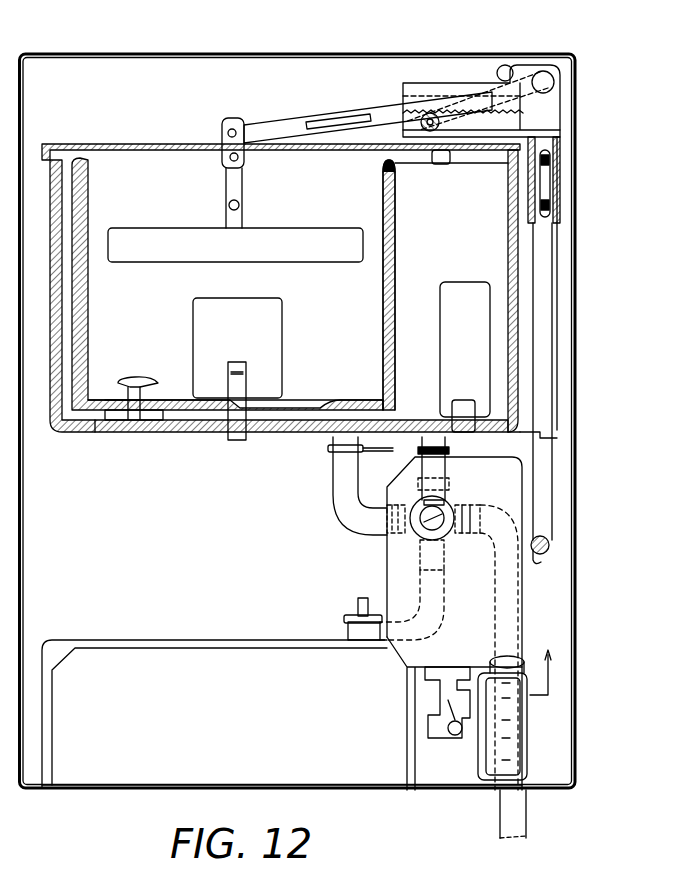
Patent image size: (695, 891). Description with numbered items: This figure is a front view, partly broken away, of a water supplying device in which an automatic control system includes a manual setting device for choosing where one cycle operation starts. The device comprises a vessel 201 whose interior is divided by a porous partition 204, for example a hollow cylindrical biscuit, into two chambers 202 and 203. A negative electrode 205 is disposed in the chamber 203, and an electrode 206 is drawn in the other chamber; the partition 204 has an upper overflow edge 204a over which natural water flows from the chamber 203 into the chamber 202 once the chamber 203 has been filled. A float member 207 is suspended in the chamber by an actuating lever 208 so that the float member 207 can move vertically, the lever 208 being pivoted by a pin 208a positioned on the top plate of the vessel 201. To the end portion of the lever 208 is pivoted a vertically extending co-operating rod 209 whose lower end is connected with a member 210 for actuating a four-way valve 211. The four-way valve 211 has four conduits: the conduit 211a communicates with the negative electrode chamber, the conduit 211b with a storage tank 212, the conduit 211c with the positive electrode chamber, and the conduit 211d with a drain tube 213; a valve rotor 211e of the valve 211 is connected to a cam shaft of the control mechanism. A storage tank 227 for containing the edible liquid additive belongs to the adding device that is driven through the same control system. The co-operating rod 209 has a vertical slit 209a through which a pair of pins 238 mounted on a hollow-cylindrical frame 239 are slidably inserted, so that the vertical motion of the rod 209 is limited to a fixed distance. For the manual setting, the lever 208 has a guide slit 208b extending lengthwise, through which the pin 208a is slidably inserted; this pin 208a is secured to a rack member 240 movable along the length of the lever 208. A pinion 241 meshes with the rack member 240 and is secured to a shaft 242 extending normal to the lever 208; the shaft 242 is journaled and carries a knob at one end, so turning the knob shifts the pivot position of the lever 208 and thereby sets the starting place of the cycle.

The vessel 201 is at (50, 330).
The chamber 202 is at (346, 336).
The chamber 203 is at (440, 261).
The porous partition 204 is at (398, 208).
The upper overflow edge 204a is at (385, 180).
The negative electrode 205 is at (238, 302).
The heater 206 is at (446, 348).
The float member 207 is at (155, 230).
The actuating lever 208 is at (272, 118).
The pin 208a is at (488, 88).
The guide slit 208b is at (492, 66).
The co-operating rod 209 is at (545, 338).
The vertical slit 209a is at (552, 181).
The member 210 is at (540, 555).
The four-way valve 211 is at (416, 546).
The conduit 211a is at (338, 506).
The conduit 211b is at (362, 601).
The conduit 211c is at (450, 479).
The conduit 211d is at (515, 620).
The valve rotor 211e is at (426, 512).
The storage tank 212 is at (230, 640).
The drain tube 213 is at (505, 825).
The storage tank 227 is at (526, 737).
The pins 238 is at (552, 161).
The hollow-cylindrical frame 239 is at (530, 200).
The rack member 240 is at (372, 110).
The pinion 241 is at (424, 140).
The shaft 242 is at (442, 136).